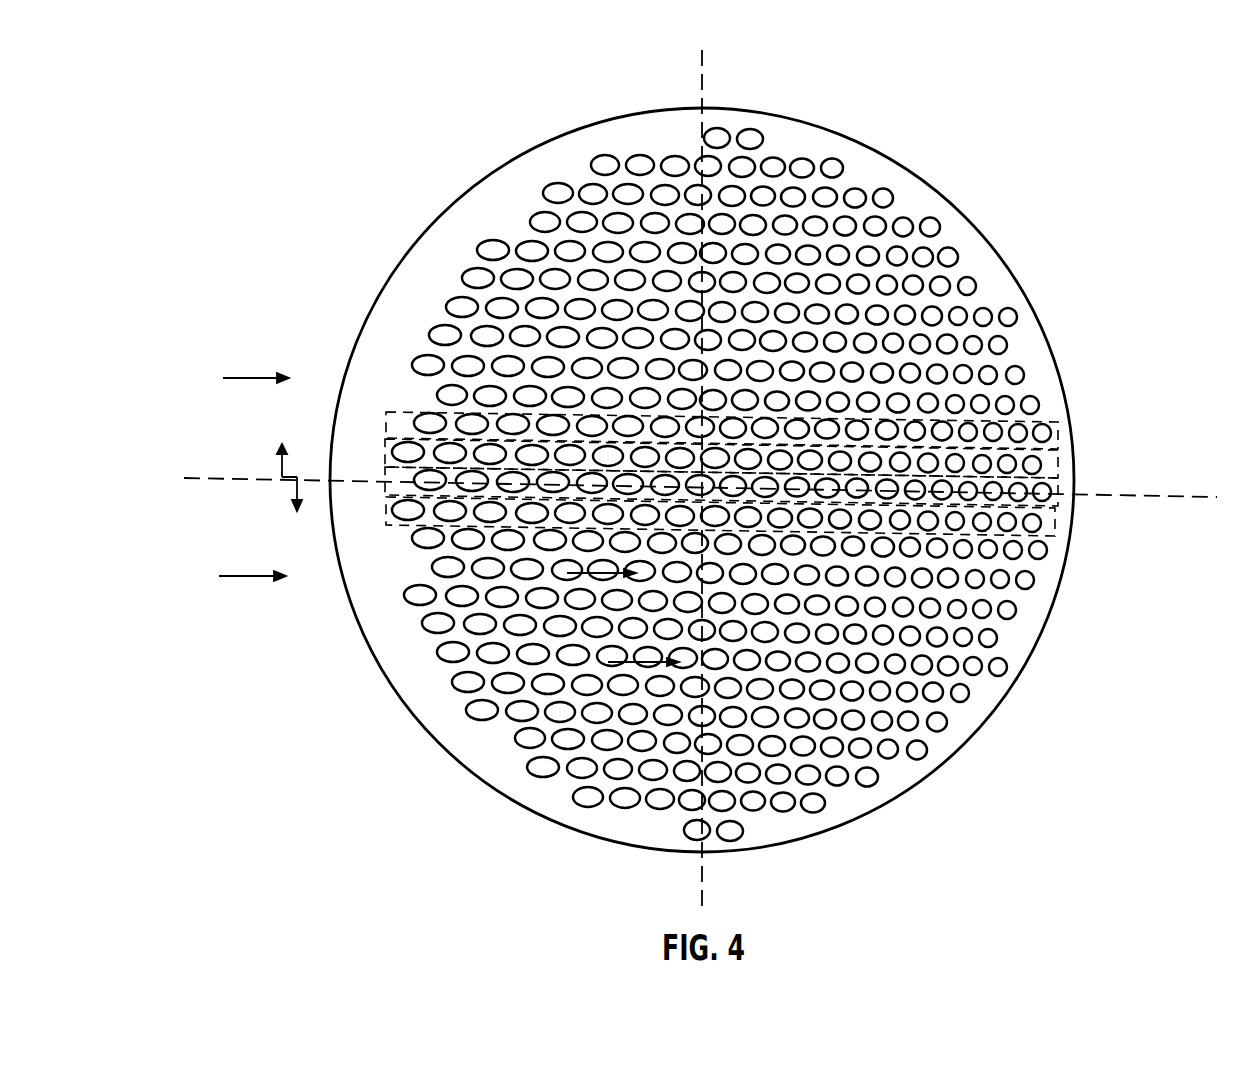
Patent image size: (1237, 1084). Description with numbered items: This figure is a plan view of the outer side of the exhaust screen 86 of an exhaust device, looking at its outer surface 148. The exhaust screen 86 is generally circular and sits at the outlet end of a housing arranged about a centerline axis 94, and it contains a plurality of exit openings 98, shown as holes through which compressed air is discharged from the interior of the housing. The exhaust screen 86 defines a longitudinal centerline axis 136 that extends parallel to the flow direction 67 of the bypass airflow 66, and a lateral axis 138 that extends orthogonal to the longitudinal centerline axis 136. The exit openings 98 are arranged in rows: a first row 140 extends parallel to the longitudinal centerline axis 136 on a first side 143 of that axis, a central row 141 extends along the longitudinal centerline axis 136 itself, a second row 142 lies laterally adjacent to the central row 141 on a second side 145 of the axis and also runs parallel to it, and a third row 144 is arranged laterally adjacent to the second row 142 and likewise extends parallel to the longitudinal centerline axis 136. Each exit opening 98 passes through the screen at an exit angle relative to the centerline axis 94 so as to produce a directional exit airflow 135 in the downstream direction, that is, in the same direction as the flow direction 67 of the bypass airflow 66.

The exhaust screen 86 is at (973, 263).
The exit openings 98 is at (749, 130).
The outer surface 148 is at (877, 178).
The lateral axis 138 is at (700, 76).
The longitudinal centerline axis 136 is at (1152, 497).
The third row 144 is at (413, 411).
The second row 142 is at (386, 457).
The central row 141 is at (384, 486).
The first row 140 is at (395, 523).
The second side 145 is at (279, 458).
The first side 143 is at (292, 488).
The flow direction 67 is at (233, 377).
The bypass airflow 66 is at (233, 577).
The directional exit airflow 135 is at (603, 580).
The centerline axis 94 is at (712, 500).